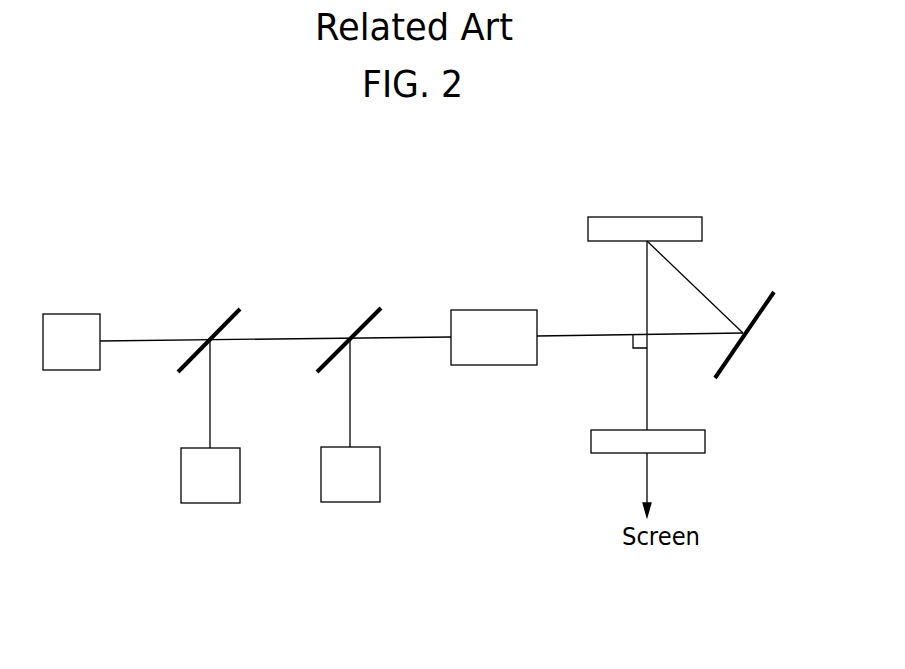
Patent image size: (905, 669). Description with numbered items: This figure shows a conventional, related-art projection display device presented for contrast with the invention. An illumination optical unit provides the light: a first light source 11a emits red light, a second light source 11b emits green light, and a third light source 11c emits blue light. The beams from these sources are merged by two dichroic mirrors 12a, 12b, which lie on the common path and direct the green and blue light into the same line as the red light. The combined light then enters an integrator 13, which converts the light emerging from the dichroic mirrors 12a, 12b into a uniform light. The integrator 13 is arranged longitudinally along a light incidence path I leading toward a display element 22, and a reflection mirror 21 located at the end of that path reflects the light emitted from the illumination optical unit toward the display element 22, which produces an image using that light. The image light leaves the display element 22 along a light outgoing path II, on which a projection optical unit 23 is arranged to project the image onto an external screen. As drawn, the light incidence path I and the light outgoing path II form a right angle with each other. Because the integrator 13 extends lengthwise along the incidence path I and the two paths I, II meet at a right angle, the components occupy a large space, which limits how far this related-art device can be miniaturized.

The first light source 11a is at (65, 317).
The second light source 11b is at (181, 478).
The third light source 11c is at (380, 478).
The dichroic mirror 12a is at (222, 322).
The dichroic mirror 12b is at (362, 322).
The integrator 13 is at (494, 312).
The reflection mirror 21 is at (760, 313).
The display element 22 is at (702, 228).
The projection optical unit 23 is at (705, 440).
The light incidence path I is at (570, 335).
The light outgoing path II is at (648, 408).